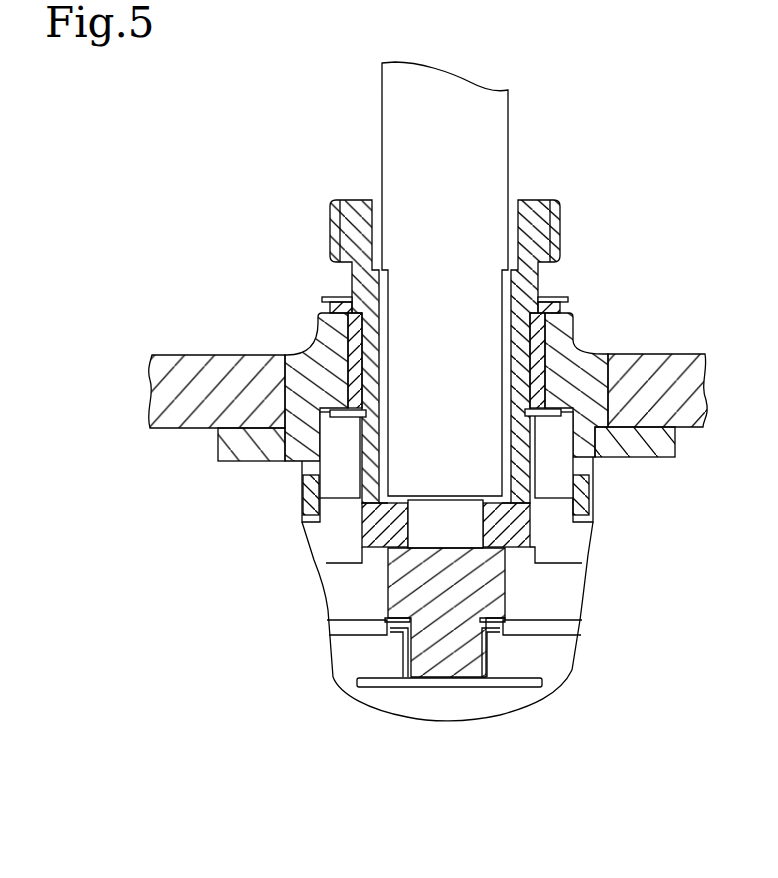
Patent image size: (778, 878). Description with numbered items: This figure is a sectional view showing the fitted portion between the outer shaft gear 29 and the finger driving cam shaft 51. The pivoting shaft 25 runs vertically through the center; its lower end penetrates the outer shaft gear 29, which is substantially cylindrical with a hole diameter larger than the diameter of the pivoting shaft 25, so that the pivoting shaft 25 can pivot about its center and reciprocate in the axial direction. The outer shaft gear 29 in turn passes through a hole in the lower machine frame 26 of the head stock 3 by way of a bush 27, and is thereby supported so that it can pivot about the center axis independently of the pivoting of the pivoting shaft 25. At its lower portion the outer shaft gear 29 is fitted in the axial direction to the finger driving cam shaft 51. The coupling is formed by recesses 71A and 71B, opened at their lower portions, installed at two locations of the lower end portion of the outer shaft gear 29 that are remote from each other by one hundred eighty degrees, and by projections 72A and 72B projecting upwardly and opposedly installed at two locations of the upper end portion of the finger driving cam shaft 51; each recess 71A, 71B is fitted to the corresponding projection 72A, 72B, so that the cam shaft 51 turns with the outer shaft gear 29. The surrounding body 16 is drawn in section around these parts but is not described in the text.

The head stock 3 is at (668, 354).
The housing 16 is at (590, 543).
The pivoting shaft 25 is at (382, 113).
The lower machine frame 26 is at (573, 326).
The bush 27 is at (565, 298).
The outer shaft gear 29 is at (535, 200).
The finger driving cam shaft 51 is at (387, 588).
The recess 71A is at (360, 424).
The recess 71B is at (540, 420).
The projection 72A is at (358, 450).
The projection 72B is at (548, 440).